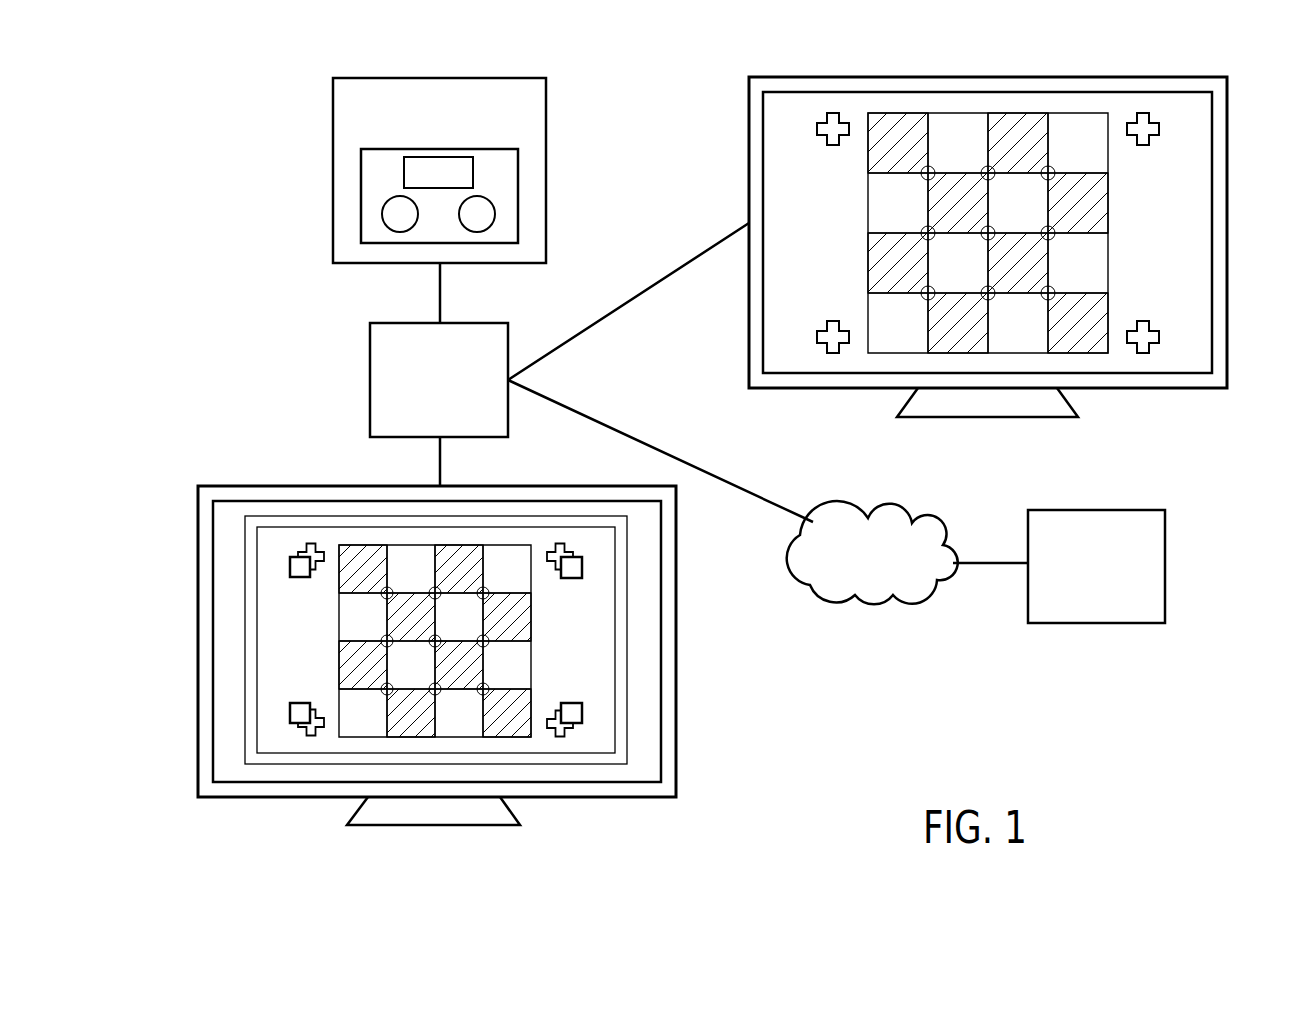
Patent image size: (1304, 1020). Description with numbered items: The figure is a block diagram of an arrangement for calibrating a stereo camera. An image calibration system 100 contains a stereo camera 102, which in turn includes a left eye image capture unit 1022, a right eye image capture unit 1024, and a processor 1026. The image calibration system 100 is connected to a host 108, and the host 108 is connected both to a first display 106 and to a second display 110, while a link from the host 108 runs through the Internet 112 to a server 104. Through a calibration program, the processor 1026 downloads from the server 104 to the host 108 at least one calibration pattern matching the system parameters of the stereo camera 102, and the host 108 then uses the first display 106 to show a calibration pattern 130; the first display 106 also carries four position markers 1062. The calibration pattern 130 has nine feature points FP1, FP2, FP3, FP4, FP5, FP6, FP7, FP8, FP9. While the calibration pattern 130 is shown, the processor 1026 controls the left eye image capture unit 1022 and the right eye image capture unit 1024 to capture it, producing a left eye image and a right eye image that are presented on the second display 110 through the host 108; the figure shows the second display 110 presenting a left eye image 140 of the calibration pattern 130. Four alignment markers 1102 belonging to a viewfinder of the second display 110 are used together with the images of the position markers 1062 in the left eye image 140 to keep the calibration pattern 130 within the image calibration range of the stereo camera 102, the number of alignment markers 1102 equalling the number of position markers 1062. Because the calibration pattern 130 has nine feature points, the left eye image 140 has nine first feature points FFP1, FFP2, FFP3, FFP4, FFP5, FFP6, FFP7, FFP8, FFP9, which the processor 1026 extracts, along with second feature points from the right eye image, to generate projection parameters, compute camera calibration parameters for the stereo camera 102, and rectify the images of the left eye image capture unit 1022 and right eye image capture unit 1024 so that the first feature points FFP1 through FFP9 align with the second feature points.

The image calibration system 100 is at (333, 140).
The stereo camera 102 is at (361, 212).
The left eye image capture unit 1022 is at (400, 232).
The right eye image capture unit 1024 is at (477, 232).
The processor 1026 is at (475, 174).
The server 104 is at (1165, 566).
The first display 106 is at (1227, 208).
The position markers 1062 is at (817, 129).
The host 108 is at (370, 380).
The second display 110 is at (272, 486).
The alignment markers 1102 is at (290, 570).
The Internet 112 is at (851, 505).
The calibration pattern 130 is at (1108, 240).
The left eye image 140 is at (245, 652).
The feature point FP1 is at (931, 168).
The feature point FP2 is at (991, 177).
The feature point FP3 is at (1051, 168).
The feature point FP4 is at (925, 228).
The feature point FP5 is at (985, 236).
The feature point FP6 is at (1051, 237).
The feature point FP7 is at (925, 297).
The feature point FP8 is at (991, 297).
The feature point FP9 is at (1045, 298).
The first feature point FFP1 is at (389, 589).
The first feature point FFP2 is at (437, 597).
The first feature point FFP3 is at (486, 589).
The first feature point FFP4 is at (384, 637).
The first feature point FFP5 is at (450, 658).
The first feature point FFP6 is at (486, 645).
The first feature point FFP7 is at (384, 693).
The first feature point FFP8 is at (438, 693).
The first feature point FFP9 is at (489, 689).